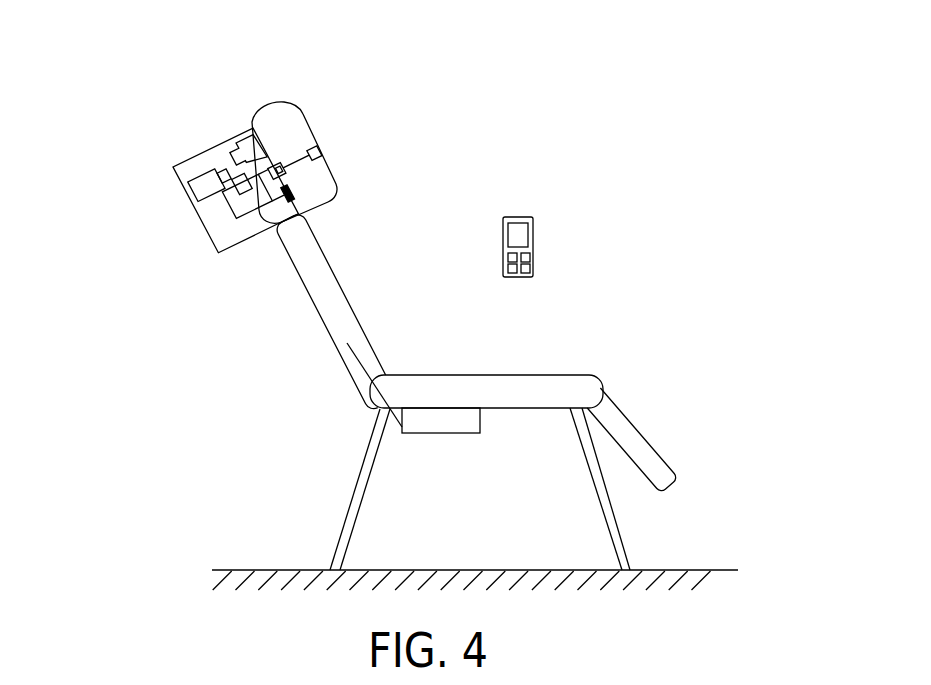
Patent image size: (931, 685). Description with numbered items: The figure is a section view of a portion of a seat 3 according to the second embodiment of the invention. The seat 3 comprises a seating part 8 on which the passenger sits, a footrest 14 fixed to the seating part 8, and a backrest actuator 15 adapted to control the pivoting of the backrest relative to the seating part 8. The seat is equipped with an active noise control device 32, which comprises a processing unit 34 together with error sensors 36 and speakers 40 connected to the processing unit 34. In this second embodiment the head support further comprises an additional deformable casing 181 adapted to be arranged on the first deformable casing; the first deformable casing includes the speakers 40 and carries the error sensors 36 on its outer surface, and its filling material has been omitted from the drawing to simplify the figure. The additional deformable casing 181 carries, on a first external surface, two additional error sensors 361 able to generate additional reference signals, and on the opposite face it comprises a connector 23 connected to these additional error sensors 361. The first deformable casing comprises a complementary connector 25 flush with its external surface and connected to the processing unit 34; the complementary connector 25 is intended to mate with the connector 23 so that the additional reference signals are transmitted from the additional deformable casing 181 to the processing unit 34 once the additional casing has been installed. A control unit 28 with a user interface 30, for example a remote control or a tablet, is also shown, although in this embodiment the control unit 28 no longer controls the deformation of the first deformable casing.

The seat 3 is at (760, 227).
The seating part 8 is at (515, 375).
The footrest 14 is at (657, 450).
The backrest actuator 15 is at (446, 436).
The connector 23 is at (277, 171).
The complementary connector 25 is at (278, 169).
The control unit 28 is at (525, 218).
The user interface 30 is at (519, 248).
The active noise control device 32 is at (138, 247).
The processing unit 34 is at (258, 160).
The error sensors 36 is at (288, 193).
The speakers 40 is at (247, 152).
The additional deformable casing 181 is at (268, 104).
The additional error sensors 361 is at (301, 159).